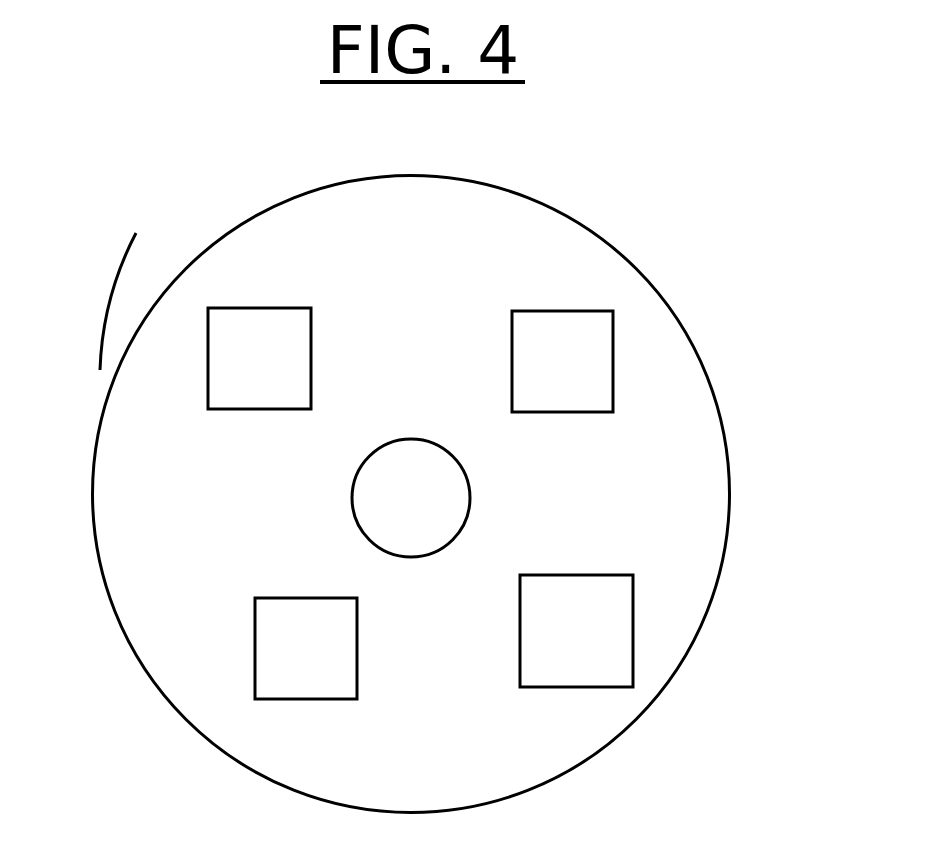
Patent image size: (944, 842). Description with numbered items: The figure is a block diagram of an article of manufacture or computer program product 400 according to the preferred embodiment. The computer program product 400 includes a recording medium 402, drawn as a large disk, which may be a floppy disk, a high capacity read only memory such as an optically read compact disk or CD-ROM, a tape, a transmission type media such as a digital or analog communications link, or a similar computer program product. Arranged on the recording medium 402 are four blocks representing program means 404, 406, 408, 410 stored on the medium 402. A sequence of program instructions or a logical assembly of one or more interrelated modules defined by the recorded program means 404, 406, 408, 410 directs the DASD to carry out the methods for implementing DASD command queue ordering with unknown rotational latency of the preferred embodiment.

The computer program product 400 is at (682, 285).
The recording medium 402 is at (146, 314).
The program means 404 is at (306, 648).
The program means 406 is at (576, 631).
The program means 408 is at (562, 361).
The program means 410 is at (259, 358).